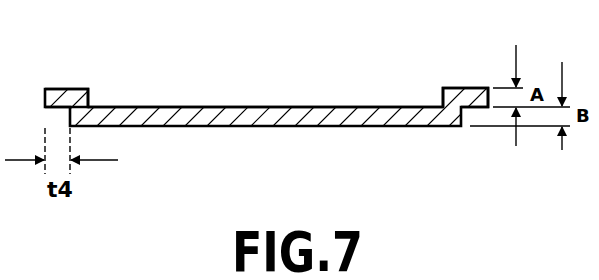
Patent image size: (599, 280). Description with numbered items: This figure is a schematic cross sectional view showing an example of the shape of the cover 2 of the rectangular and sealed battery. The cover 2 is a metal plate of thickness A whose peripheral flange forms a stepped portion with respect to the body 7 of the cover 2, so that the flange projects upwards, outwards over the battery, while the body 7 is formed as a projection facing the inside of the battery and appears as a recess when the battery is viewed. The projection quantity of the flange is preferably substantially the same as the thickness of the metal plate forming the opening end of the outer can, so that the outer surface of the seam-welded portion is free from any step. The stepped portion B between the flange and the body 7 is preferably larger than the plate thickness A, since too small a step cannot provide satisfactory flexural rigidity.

The cover 2 is at (328, 91).
The body 7 is at (238, 106).